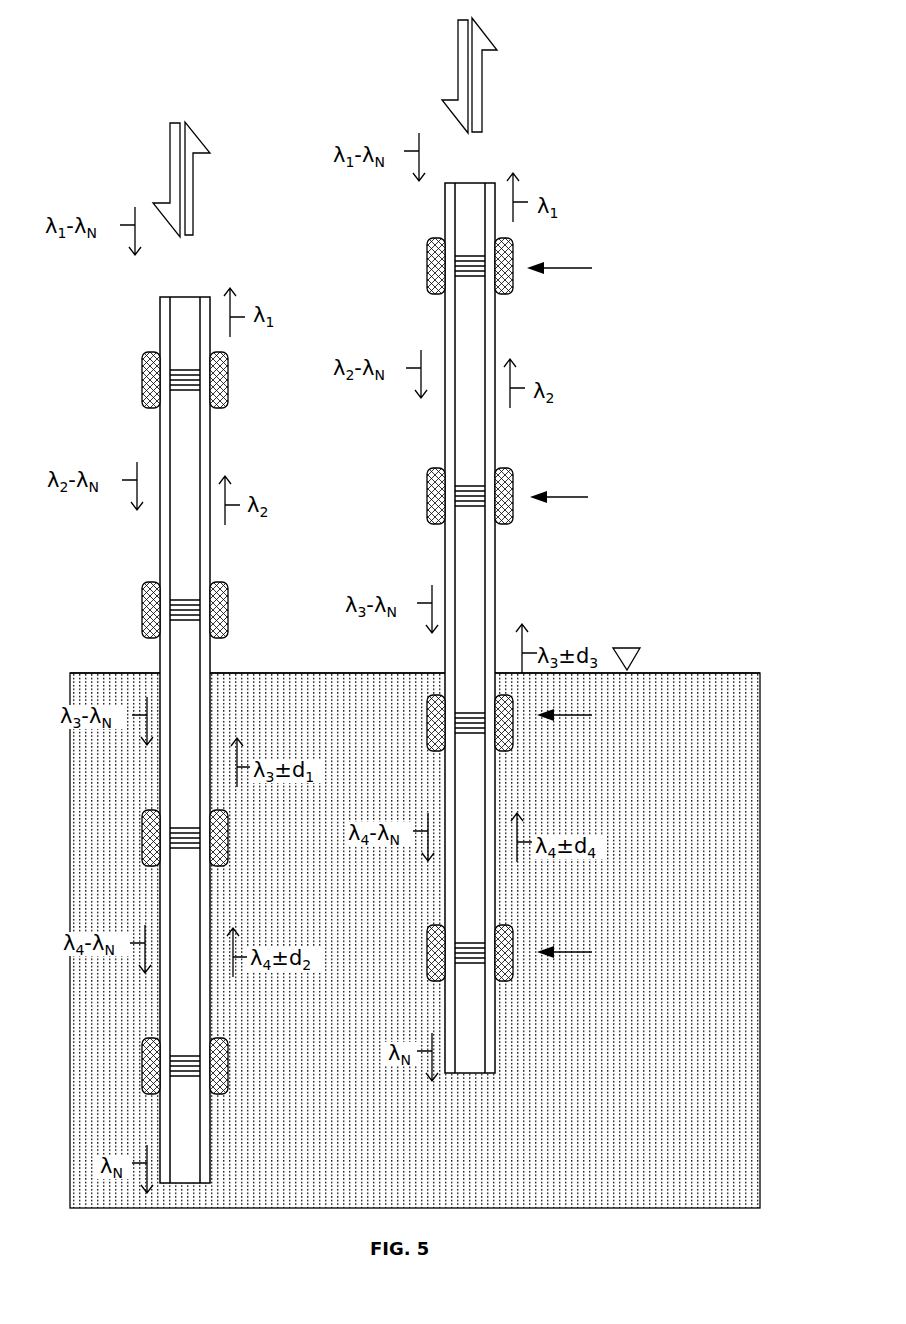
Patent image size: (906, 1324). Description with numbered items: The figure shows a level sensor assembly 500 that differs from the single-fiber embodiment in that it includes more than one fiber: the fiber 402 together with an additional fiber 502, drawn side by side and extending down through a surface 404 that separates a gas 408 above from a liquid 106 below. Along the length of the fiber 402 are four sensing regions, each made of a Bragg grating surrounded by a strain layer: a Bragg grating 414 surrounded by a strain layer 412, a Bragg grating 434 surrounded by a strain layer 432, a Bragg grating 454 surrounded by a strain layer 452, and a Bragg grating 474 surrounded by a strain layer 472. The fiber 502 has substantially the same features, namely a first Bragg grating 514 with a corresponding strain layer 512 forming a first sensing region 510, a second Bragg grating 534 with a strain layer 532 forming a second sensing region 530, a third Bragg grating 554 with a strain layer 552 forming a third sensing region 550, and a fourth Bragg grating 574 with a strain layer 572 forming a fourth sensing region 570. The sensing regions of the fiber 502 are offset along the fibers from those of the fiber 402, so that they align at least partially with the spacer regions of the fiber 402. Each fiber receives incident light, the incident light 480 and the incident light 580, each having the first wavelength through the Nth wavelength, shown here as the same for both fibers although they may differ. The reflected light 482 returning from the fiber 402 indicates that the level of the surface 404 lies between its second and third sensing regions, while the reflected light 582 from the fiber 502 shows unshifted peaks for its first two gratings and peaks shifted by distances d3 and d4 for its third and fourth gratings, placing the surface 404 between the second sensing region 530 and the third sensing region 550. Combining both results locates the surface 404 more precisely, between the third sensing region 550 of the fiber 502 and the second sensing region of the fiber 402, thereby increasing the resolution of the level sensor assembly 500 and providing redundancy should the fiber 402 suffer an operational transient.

The level sensor assembly 500 is at (120, 33).
The incident light 480 is at (170, 165).
The reflected light 482 is at (268, 247).
The incident light 580 is at (458, 62).
The reflected light 582 is at (515, 102).
The fiber 402 is at (168, 298).
The strain layer 412 is at (150, 355).
The Bragg grating 414 is at (188, 389).
The strain layer 432 is at (152, 583).
The Bragg grating 434 is at (190, 624).
The strain layer 452 is at (152, 815).
The Bragg grating 454 is at (190, 850).
The strain layer 472 is at (155, 1042).
The Bragg grating 474 is at (190, 1082).
The fiber 502 is at (445, 210).
The strain layer 512 is at (440, 240).
The Bragg grating 514 is at (470, 275).
The strain layer 532 is at (440, 470).
The Bragg grating 534 is at (470, 510).
The strain layer 552 is at (440, 700).
The Bragg grating 554 is at (475, 737).
The strain layer 572 is at (440, 930).
The Bragg grating 574 is at (475, 969).
The first sensing region 510 is at (661, 317).
The second sensing region 530 is at (661, 541).
The third sensing region 550 is at (666, 761).
The fourth sensing region 570 is at (671, 996).
The gas 408 is at (733, 592).
The surface 404 is at (653, 672).
The liquid 106 is at (740, 799).